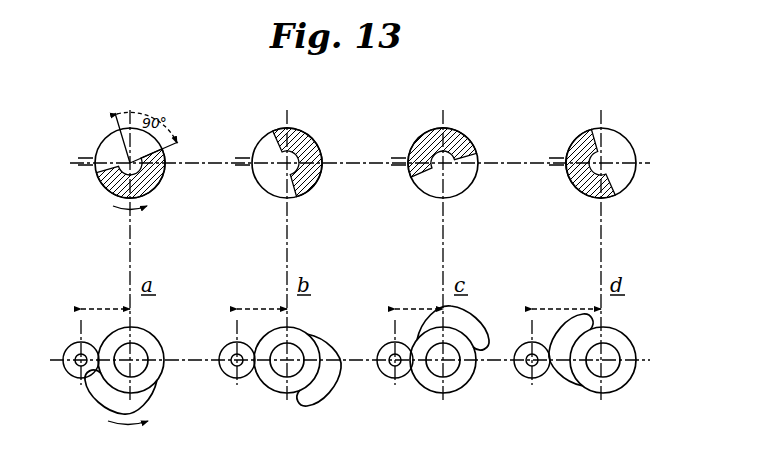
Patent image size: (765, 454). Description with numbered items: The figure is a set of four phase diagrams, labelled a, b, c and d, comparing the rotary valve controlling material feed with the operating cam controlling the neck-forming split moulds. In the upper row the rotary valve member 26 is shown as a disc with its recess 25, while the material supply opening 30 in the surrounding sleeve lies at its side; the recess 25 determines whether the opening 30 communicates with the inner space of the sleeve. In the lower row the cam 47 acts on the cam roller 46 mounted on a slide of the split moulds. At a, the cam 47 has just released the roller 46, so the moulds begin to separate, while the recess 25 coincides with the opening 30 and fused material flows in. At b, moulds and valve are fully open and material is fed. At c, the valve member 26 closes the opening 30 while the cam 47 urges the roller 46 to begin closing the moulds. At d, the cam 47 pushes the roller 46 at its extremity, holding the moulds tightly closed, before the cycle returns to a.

The recess 25 is at (589, 134).
The rotary valve member 26 is at (571, 193).
The material supply opening 30 is at (568, 171).
The cam roller 46 is at (514, 404).
The cam 47 is at (580, 403).